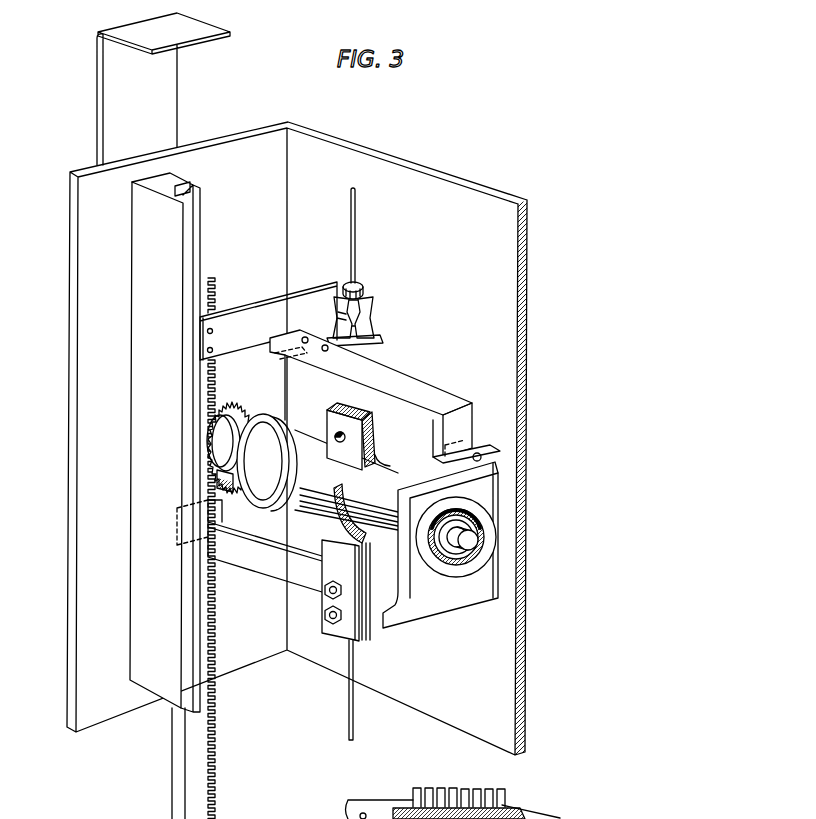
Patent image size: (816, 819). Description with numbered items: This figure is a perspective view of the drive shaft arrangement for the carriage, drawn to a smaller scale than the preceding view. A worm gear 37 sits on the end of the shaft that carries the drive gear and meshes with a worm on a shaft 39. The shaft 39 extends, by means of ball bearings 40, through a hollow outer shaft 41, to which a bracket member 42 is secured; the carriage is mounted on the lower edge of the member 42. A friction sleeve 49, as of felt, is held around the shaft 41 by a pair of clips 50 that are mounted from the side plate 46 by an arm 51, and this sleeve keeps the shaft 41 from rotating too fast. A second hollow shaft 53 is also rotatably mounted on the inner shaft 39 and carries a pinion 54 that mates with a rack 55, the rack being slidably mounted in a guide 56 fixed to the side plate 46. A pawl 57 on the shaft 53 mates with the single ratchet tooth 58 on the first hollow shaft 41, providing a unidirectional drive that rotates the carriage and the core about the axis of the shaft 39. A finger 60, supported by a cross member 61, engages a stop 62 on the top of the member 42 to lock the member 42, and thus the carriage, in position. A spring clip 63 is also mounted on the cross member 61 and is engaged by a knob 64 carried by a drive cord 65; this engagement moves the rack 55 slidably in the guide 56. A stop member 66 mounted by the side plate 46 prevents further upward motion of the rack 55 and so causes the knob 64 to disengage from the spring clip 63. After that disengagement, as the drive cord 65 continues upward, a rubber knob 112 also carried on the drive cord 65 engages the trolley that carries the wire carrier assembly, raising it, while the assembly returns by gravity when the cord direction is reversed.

The worm gear 37 is at (522, 815).
The shaft 39 is at (484, 540).
The ball bearings 40 is at (475, 519).
The hollow outer shaft 41 is at (382, 480).
The bracket member 42 is at (490, 580).
The side plate 46 is at (82, 643).
The friction sleeve 49 is at (382, 462).
The clips 50 is at (352, 437).
The arm 51 is at (250, 565).
The second hollow shaft 53 is at (223, 436).
The pinion 54 is at (233, 402).
The rack 55 is at (217, 387).
The guide 56 is at (150, 230).
The pawl 57 is at (213, 465).
The single ratchet tooth 58 is at (242, 500).
The finger 60 is at (400, 378).
The cross member 61 is at (257, 310).
The stop 62 is at (472, 453).
The spring clip 63 is at (370, 310).
The knob 64 is at (372, 333).
The drive cord 65 is at (358, 225).
The stop member 66 is at (192, 33).
The rubber knob 112 is at (358, 288).